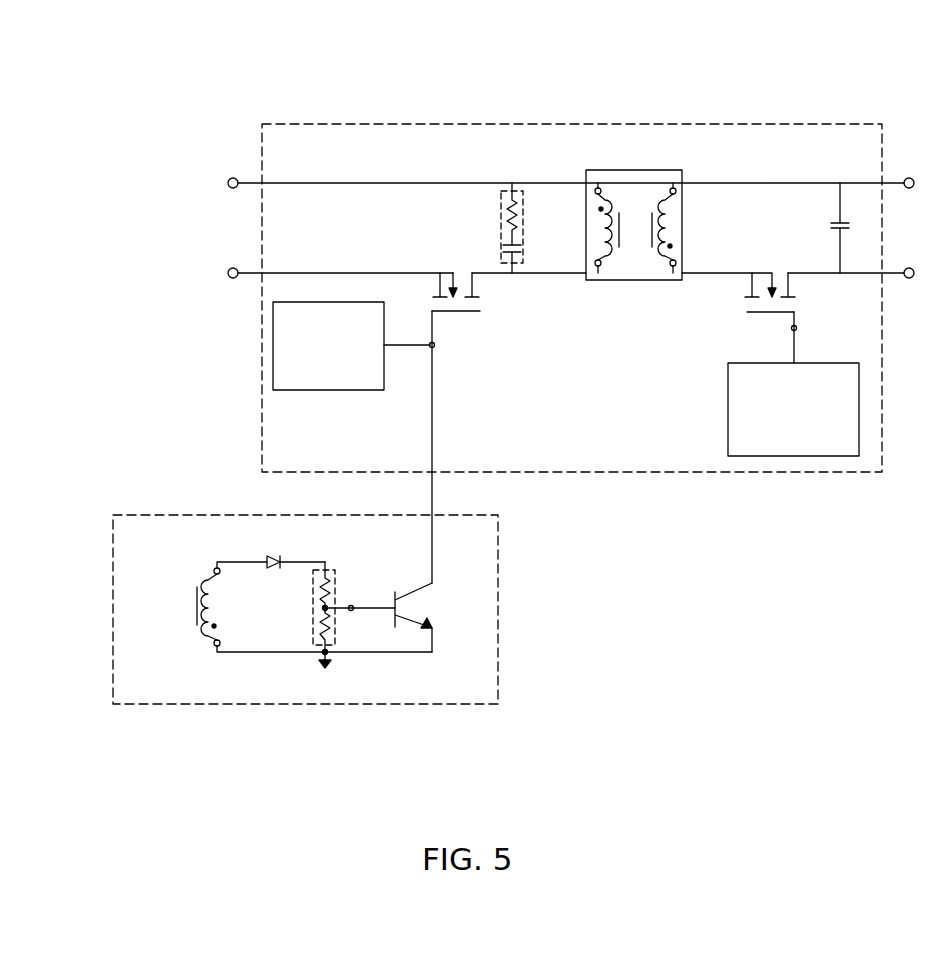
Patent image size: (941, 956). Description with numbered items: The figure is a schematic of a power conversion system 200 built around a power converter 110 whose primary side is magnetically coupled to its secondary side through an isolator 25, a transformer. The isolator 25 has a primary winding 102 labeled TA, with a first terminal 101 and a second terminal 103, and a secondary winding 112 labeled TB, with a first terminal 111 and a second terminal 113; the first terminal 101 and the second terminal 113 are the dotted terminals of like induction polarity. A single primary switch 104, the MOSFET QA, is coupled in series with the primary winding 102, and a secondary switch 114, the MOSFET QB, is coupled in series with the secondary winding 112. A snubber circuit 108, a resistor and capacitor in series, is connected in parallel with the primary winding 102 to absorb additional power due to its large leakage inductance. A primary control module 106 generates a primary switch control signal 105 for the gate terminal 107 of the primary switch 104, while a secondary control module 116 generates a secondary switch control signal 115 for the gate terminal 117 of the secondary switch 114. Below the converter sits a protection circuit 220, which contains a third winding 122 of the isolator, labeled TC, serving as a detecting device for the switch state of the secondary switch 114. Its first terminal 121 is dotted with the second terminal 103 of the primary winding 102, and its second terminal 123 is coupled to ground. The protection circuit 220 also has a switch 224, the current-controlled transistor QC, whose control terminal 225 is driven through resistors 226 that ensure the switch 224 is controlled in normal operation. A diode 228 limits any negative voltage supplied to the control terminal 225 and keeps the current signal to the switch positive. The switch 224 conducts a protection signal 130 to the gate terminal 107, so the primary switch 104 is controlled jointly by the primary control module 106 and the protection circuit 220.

The power conversion system 200 is at (273, 63).
The power converter 110 is at (642, 124).
The isolator 25 is at (640, 170).
The snubber circuit 108 is at (500, 210).
The first terminal of the primary winding 101 is at (595, 193).
The second terminal of the primary winding 103 is at (595, 263).
The primary winding 102 is at (600, 280).
The secondary winding 112 is at (660, 280).
The first terminal of the secondary winding 111 is at (676, 193).
The second terminal of the secondary winding 113 is at (676, 263).
The primary switch 104 is at (478, 286).
The secondary switch 114 is at (795, 286).
The gate terminal of the primary switch 107 is at (435, 345).
The primary switch control signal 105 is at (400, 348).
The primary control module 106 is at (337, 392).
The protection signal 130 is at (435, 428).
The secondary switch control signal 115 is at (792, 343).
The gate terminal of the secondary switch 117 is at (797, 328).
The secondary control module 116 is at (727, 398).
The protection circuit 220 is at (498, 608).
The diode 228 is at (283, 560).
The resistors 226 is at (337, 578).
The first terminal of the third winding 121 is at (225, 575).
The second terminal of the third winding 123 is at (222, 643).
The third winding 122 is at (200, 628).
The control terminal of the switch 225 is at (352, 612).
The switch 224 is at (433, 640).